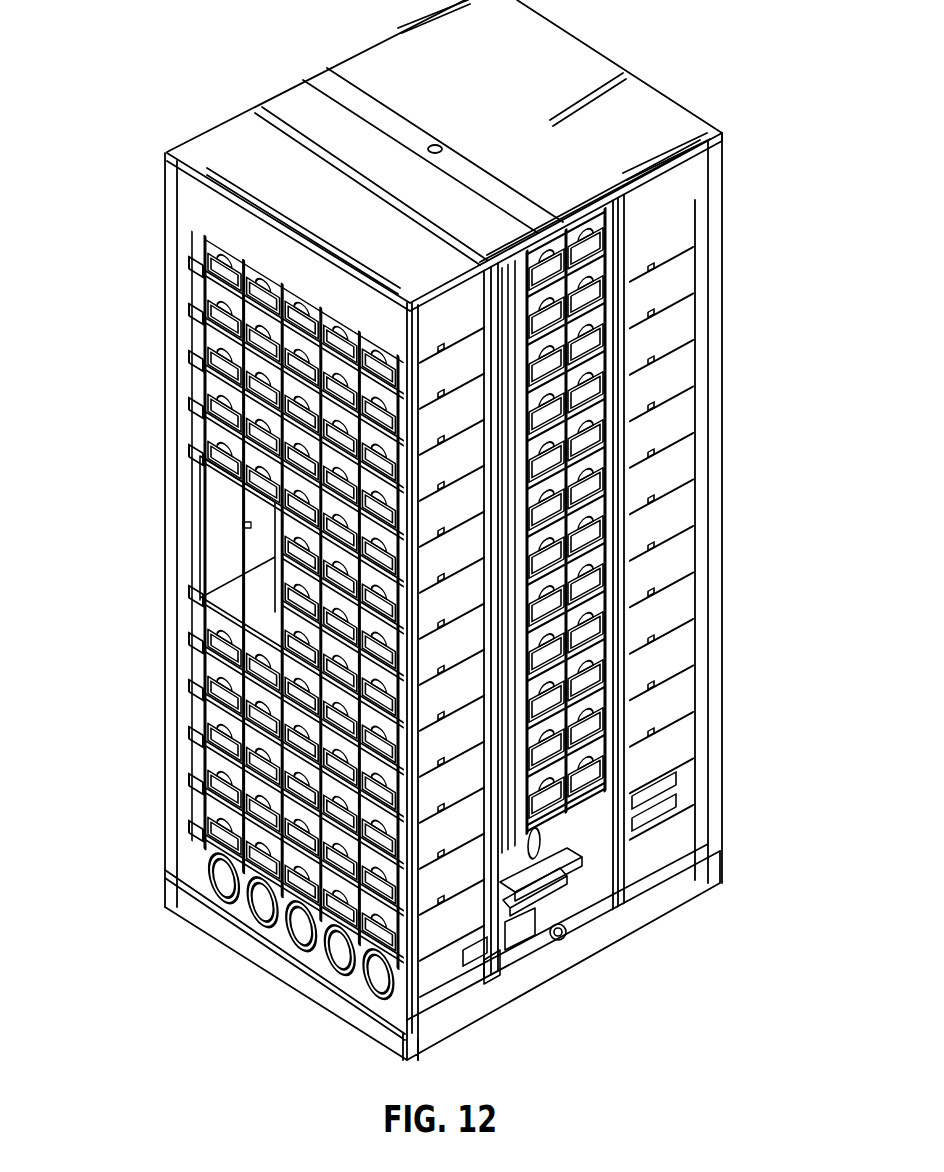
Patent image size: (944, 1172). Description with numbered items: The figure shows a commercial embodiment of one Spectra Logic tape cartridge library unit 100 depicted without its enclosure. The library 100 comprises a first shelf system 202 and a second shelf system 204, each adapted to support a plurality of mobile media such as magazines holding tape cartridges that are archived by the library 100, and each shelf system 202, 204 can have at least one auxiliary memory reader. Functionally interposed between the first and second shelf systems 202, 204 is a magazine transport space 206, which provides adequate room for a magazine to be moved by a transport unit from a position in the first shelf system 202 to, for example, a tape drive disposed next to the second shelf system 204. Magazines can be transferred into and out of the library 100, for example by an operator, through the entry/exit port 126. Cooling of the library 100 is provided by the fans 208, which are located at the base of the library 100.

The library unit 100 is at (208, 72).
The entry/exit port 126 is at (228, 560).
The first shelf system 202 is at (140, 674).
The second shelf system 204 is at (745, 537).
The magazine transport space 206 is at (582, 903).
The fans 208 is at (207, 940).